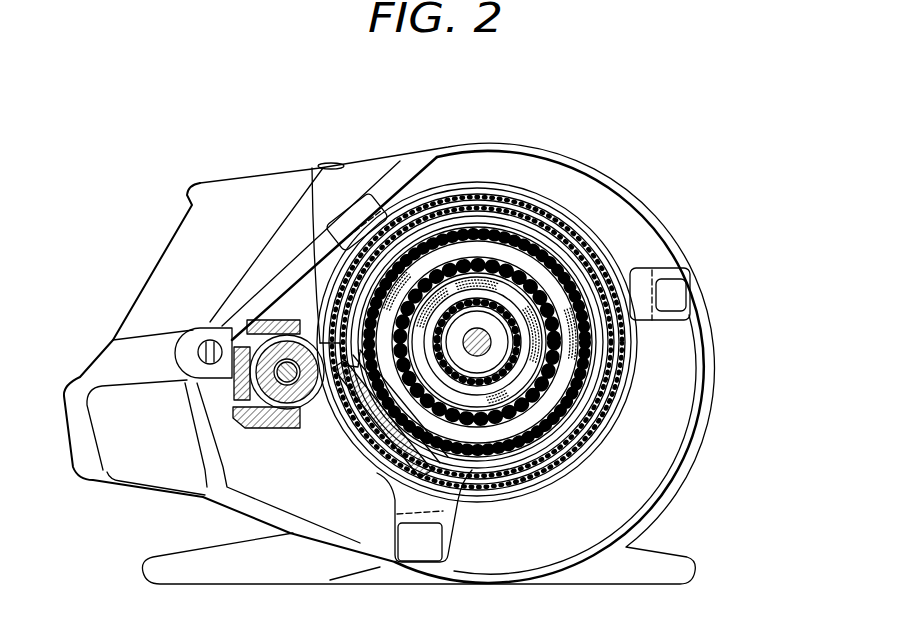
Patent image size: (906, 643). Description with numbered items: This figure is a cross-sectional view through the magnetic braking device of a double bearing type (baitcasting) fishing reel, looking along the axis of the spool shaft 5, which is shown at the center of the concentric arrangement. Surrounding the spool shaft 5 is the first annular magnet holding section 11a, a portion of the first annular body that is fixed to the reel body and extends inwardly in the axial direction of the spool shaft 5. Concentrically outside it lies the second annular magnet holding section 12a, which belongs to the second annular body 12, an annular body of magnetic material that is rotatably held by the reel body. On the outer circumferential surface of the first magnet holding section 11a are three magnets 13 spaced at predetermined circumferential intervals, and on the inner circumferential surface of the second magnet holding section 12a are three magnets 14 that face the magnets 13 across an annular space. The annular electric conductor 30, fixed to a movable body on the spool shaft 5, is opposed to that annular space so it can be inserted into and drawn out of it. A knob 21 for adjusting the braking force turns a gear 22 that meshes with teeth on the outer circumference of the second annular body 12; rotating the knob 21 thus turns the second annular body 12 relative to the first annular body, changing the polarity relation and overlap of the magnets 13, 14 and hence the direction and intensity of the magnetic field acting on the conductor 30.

The spool shaft 5 is at (470, 355).
The first annular magnet holding section 11a is at (567, 427).
The second annular body 12 is at (392, 448).
The second annular magnet holding section 12a is at (425, 195).
The magnets 13 is at (373, 303).
The magnets 14 is at (408, 250).
The knob 21 is at (278, 403).
The gear 22 is at (308, 412).
The annular electric conductor 30 is at (577, 373).